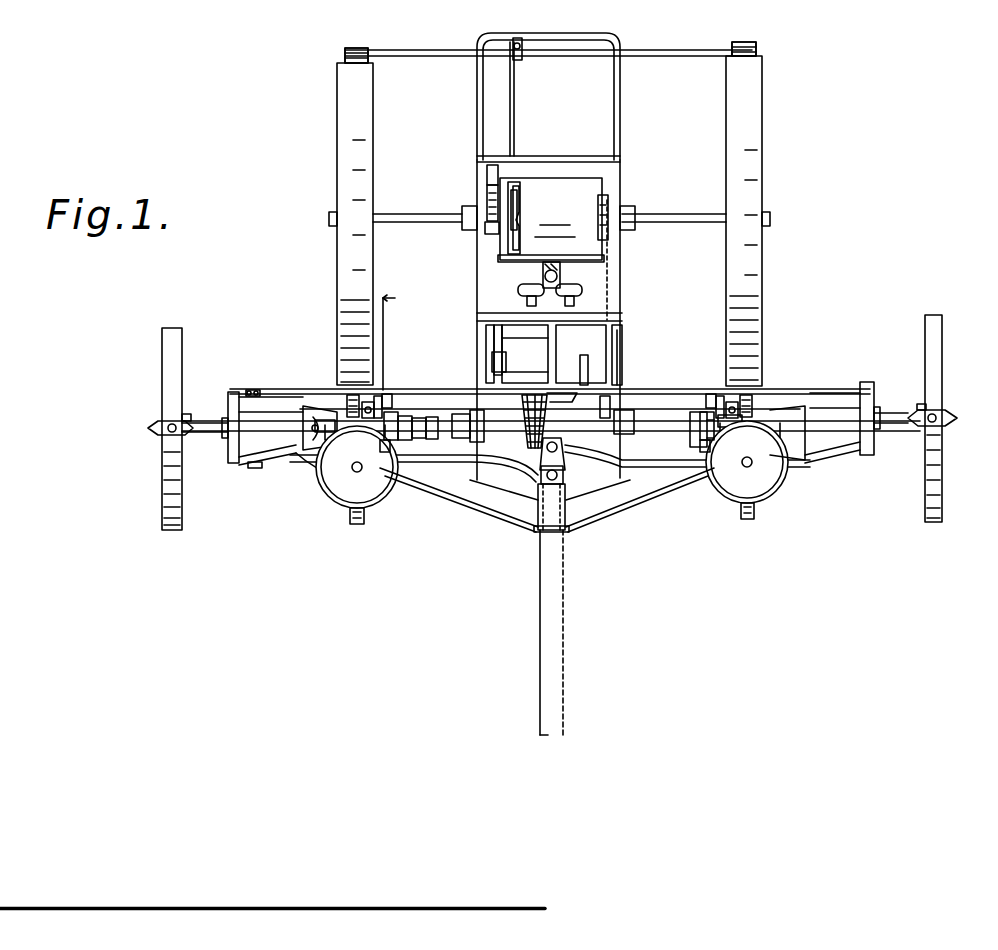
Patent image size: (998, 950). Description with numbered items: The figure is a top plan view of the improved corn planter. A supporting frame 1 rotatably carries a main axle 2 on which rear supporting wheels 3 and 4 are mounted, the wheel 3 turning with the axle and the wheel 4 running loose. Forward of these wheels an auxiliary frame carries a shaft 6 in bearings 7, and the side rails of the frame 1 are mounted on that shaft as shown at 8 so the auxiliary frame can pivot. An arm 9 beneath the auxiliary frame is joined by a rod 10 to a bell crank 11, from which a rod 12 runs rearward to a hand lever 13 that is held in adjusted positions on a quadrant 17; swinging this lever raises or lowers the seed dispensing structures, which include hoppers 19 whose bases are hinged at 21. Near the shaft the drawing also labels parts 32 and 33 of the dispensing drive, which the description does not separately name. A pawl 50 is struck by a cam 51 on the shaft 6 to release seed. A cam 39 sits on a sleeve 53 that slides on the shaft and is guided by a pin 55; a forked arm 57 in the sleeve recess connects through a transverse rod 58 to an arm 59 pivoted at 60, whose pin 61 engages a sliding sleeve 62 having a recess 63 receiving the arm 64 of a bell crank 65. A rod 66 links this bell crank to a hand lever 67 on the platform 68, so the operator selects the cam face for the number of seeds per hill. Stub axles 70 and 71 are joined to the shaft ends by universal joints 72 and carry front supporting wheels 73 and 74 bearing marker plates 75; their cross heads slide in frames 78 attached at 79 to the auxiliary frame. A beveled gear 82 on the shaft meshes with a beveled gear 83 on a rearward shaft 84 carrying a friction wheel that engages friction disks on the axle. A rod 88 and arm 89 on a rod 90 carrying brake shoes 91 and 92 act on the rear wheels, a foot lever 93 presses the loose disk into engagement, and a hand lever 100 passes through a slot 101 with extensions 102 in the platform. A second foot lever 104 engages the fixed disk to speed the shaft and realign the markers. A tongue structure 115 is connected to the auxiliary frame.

The supporting frame 1 is at (473, 108).
The main axle 2 is at (700, 215).
The supporting wheel 3 is at (762, 278).
The supporting wheel 4 is at (337, 190).
The shaft 6 is at (440, 462).
The bearings 7 is at (465, 434).
The mounting of side rails on shaft 8 is at (440, 409).
The arm 9 is at (460, 414).
The rod 10 is at (492, 362).
The bell crank 11 is at (494, 345).
The rod 12 is at (582, 295).
The hand lever 13 is at (488, 206).
The quadrant 17 is at (487, 172).
The hoppers 19 is at (338, 500).
The hinge connection 21 is at (350, 524).
The clamp 32 is at (378, 396).
The bearing housing 33 is at (735, 415).
The cam 39 is at (386, 394).
The pawl 50 is at (350, 395).
The cam 51 is at (362, 407).
The sleeve 53 is at (405, 442).
The pin 55 is at (430, 417).
The arm 57 is at (388, 452).
The rod 58 is at (705, 465).
The arm 59 is at (575, 485).
The pivot 60 is at (538, 500).
The pin 61 is at (565, 450).
The sliding sleeve 62 is at (565, 476).
The semi-angular recess 63 is at (612, 400).
The arm 64 is at (580, 380).
The bell crank 65 is at (625, 385).
The rod 66 is at (615, 330).
The hand lever 67 is at (612, 212).
The platform 68 is at (487, 195).
The stub axle 70 is at (212, 440).
The stub axle 71 is at (905, 428).
The universal joints 72 is at (305, 440).
The front supporting wheel 73 is at (162, 488).
The front supporting wheel 74 is at (937, 463).
The marker plates 75 is at (148, 430).
The frames 78 is at (232, 393).
The attachment 79 is at (255, 390).
The beveled gear 82 is at (515, 495).
The beveled gear 83 is at (535, 393).
The shaft 84 is at (548, 337).
The rod 88 is at (515, 116).
The arm 89 is at (522, 52).
The rod 90 is at (665, 57).
The brake shoe 91 is at (755, 47).
The brake shoe 92 is at (348, 50).
The foot lever 93 is at (488, 326).
The hand lever 100 is at (515, 245).
The slot 101 is at (508, 218).
The slot extensions 102 is at (520, 185).
The foot lever 104 is at (600, 312).
The tongue structure 115 is at (563, 629).